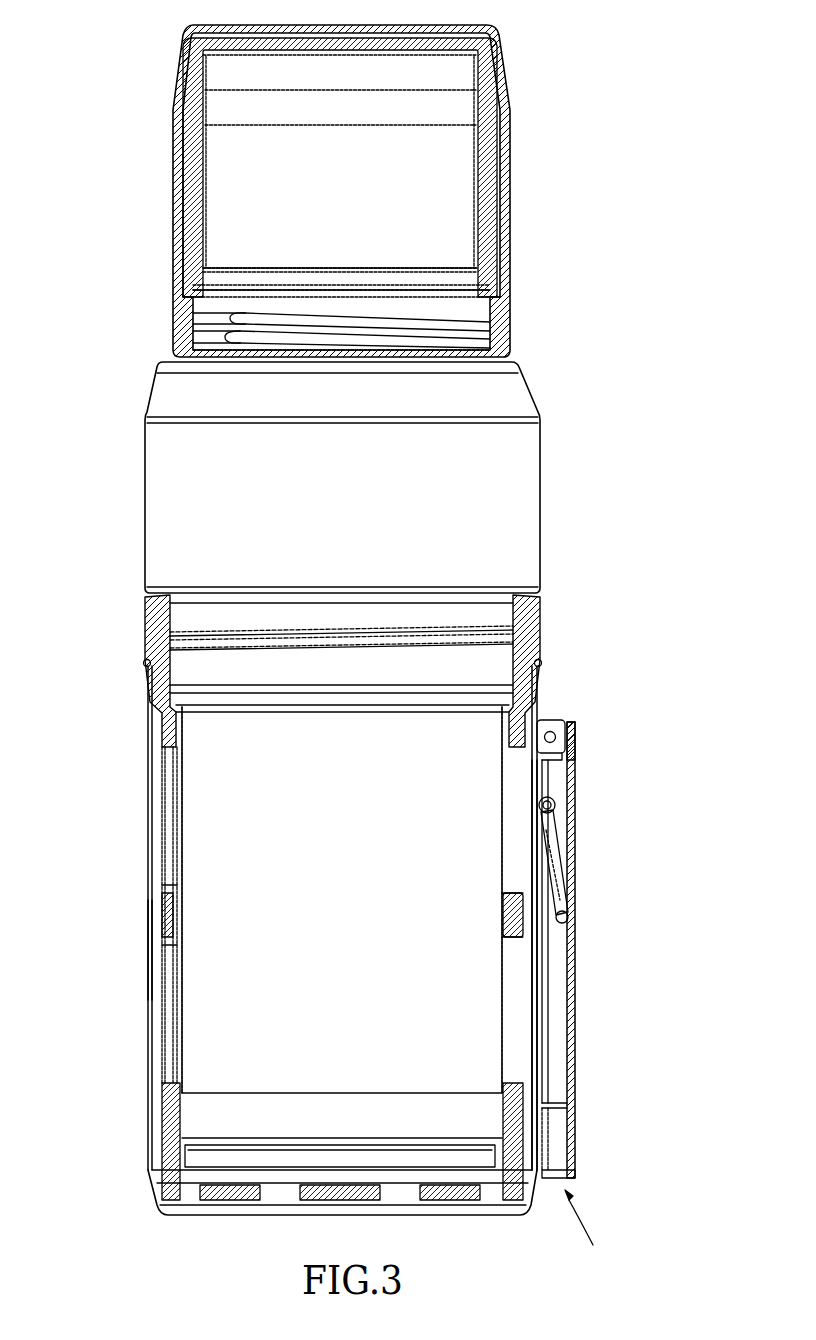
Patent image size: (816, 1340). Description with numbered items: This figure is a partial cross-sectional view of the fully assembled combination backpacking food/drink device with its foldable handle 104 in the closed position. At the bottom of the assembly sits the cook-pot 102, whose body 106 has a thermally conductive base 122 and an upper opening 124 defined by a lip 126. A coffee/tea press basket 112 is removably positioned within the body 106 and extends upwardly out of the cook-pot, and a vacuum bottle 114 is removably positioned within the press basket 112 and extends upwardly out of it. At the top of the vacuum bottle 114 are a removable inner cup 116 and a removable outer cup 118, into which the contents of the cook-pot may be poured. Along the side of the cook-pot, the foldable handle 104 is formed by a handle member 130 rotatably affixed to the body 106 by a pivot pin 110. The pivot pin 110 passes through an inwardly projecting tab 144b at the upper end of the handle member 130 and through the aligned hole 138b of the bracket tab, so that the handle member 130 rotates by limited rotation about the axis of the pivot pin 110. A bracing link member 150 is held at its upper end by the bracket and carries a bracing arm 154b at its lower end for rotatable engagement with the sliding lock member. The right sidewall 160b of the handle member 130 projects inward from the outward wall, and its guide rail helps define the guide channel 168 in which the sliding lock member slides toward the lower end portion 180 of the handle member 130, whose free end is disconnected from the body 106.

The removable outer cup 118 is at (309, 191).
The removable inner cup 116 is at (388, 194).
The vacuum bottle 114 is at (301, 477).
The coffee/tea press basket 112 is at (379, 658).
The lip 126 is at (306, 636).
The cook-pot 102 is at (288, 918).
The body 106 is at (98, 950).
The foldable handle 104 is at (629, 965).
The upper opening 124 is at (280, 953).
The thermally conductive base 122 is at (302, 1159).
The pivot pin 110 is at (592, 882).
The hole 138b is at (619, 726).
The tab 144b is at (640, 745).
The handle member 130 is at (633, 950).
The bracing link member 150 is at (630, 816).
The bracing arm 154b is at (632, 866).
The right sidewall 160b is at (633, 1135).
The lower end portion 180 is at (623, 1163).
The guide channel 168 is at (603, 1230).